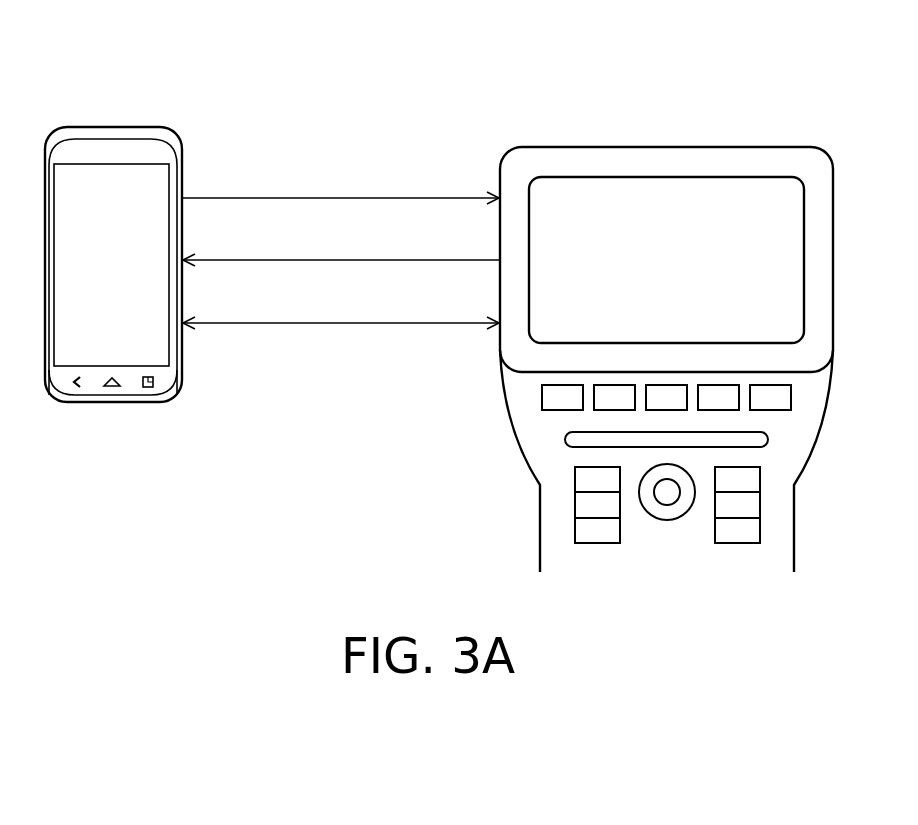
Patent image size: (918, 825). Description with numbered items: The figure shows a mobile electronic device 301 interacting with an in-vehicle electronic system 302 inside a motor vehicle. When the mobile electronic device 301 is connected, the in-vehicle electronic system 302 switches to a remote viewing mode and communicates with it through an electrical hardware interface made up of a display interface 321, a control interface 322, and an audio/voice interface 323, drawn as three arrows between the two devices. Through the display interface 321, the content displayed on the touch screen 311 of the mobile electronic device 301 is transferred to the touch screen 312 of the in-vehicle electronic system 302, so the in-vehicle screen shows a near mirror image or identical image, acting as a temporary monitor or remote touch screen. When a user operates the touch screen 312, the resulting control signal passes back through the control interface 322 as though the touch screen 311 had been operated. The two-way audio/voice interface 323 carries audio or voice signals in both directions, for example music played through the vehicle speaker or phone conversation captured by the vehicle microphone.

The mobile electronic device 301 is at (130, 127).
The touch screen 311 is at (90, 177).
The in-vehicle electronic system 302 is at (742, 147).
The touch screen 312 is at (613, 208).
The display interface 321 is at (397, 197).
The control interface 322 is at (397, 259).
The audio/voice interface 323 is at (397, 322).